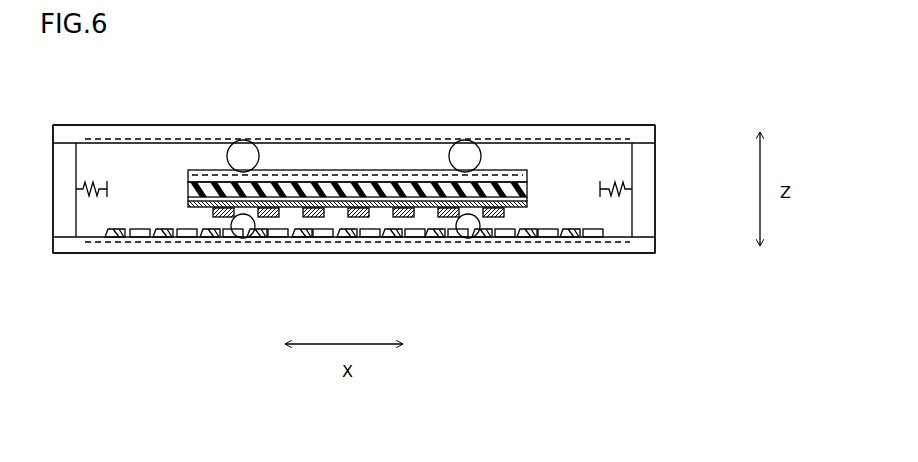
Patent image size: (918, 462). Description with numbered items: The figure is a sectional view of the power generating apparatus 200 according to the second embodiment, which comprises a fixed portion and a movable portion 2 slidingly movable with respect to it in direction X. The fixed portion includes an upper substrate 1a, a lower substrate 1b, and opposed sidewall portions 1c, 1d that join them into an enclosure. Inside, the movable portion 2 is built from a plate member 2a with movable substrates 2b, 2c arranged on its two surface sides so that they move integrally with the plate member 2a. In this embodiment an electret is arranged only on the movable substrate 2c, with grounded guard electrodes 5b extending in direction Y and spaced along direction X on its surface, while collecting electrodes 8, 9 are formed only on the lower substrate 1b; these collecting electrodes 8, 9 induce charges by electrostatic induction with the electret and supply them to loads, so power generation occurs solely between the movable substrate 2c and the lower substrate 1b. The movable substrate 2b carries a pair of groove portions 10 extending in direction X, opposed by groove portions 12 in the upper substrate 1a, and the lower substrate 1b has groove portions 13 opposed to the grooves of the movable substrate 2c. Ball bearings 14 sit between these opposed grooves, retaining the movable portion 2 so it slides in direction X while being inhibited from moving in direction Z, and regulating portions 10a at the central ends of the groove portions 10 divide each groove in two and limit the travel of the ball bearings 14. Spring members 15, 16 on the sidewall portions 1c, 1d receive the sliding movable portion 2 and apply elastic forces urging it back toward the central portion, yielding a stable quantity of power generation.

The power generating apparatus 200 is at (710, 42).
The upper substrate 1a is at (641, 126).
The lower substrate 1b is at (642, 250).
The sidewall portion 1c is at (62, 163).
The sidewall portion 1d is at (653, 167).
The movable portion 2 is at (378, 187).
The plate member 2a is at (527, 186).
The movable substrate 2b is at (527, 176).
The movable substrate 2c is at (527, 202).
The guard electrodes 5b is at (403, 218).
The collecting electrode 8 is at (122, 237).
The collecting electrode 9 is at (143, 237).
The groove portions 10 is at (378, 189).
The regulating portions 10a is at (360, 170).
The groove portions 12 is at (317, 131).
The groove portions 13 is at (573, 243).
The ball bearings 14 is at (247, 157).
The spring member 15 is at (97, 199).
The spring member 16 is at (624, 195).